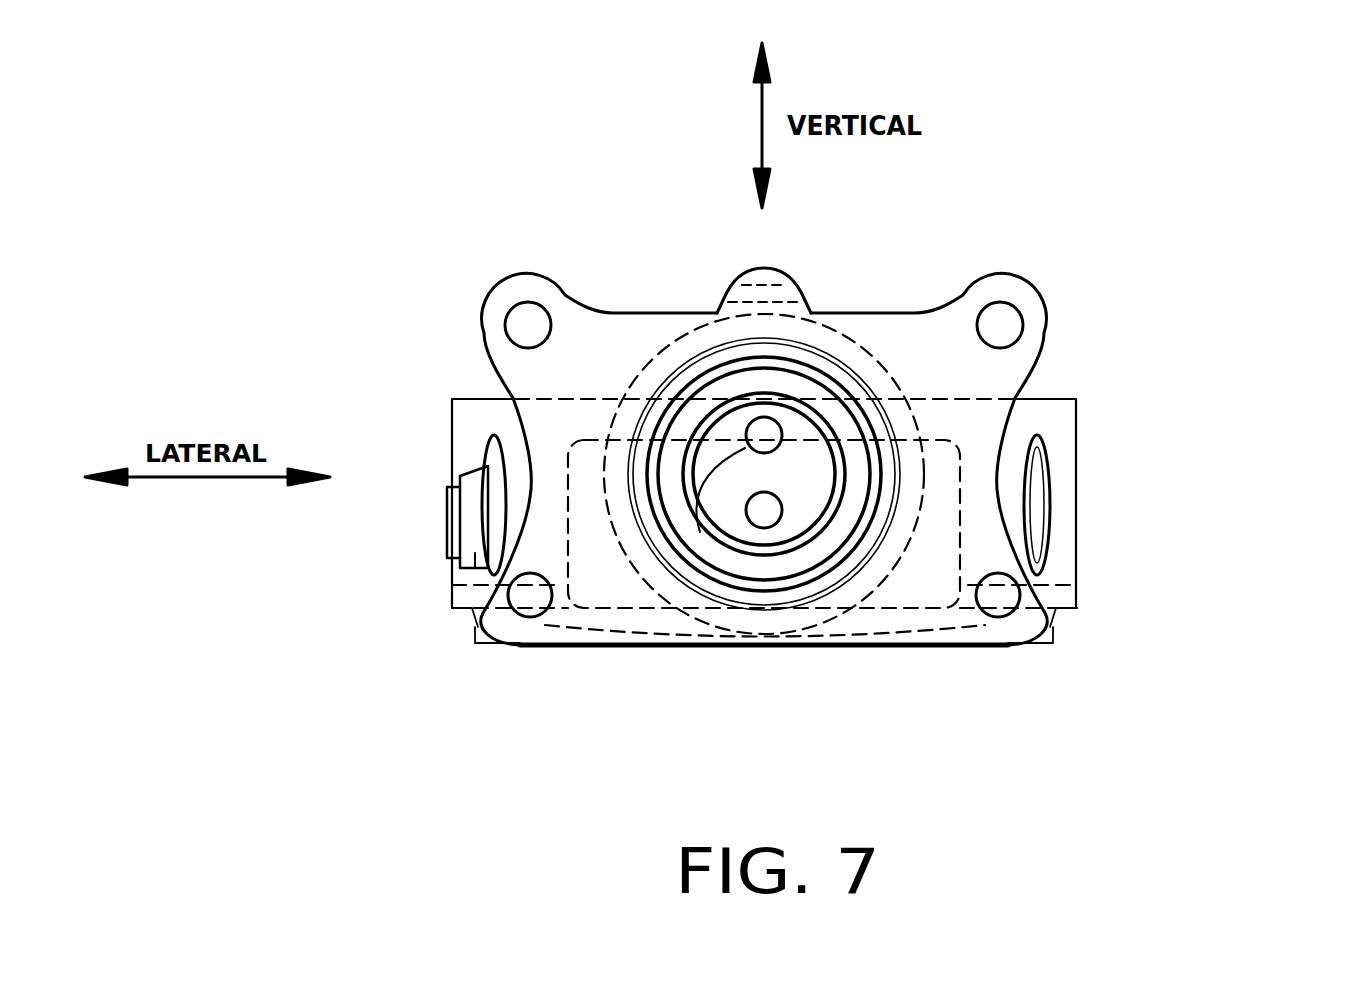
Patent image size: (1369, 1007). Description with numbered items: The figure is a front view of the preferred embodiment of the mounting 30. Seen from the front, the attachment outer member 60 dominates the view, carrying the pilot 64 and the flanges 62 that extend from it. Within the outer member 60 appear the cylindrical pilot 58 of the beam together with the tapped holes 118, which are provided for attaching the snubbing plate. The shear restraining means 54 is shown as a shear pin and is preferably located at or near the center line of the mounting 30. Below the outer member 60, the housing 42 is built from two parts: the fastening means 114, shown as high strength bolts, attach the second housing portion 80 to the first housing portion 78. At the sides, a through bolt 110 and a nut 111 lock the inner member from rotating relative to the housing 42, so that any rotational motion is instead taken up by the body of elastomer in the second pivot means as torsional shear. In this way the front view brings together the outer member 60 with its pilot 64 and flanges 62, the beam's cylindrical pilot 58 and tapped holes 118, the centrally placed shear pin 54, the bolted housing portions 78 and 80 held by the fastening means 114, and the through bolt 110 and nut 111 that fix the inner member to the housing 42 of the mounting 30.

The mounting 30 is at (1155, 431).
The housing 42 is at (442, 424).
The shear restraining means 54 is at (757, 290).
The cylindrical pilot 58 is at (797, 467).
The outer member 60 is at (613, 342).
The flanges 62 is at (1035, 297).
The pilot 64 is at (843, 360).
The first housing portion 78 is at (1058, 440).
The second housing portion 80 is at (947, 648).
The through bolt 110 is at (452, 521).
The nut 111 is at (478, 563).
The fastening means 114 is at (492, 647).
The tapped holes 118 is at (746, 517).